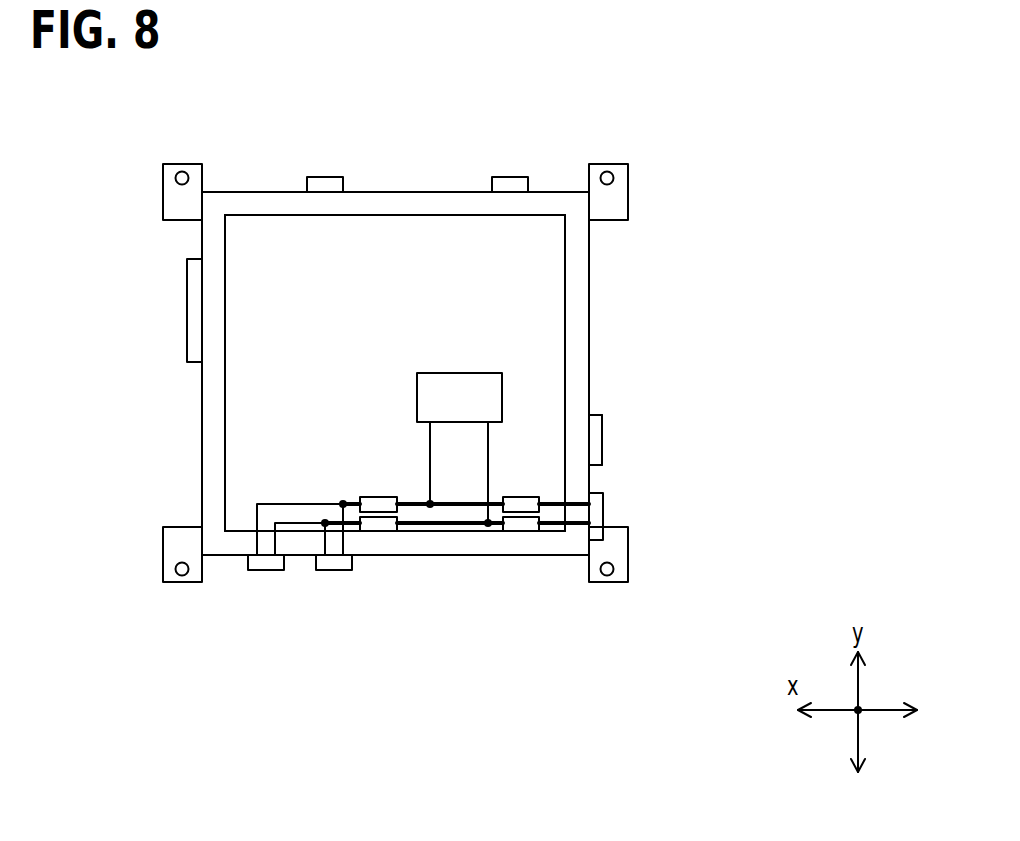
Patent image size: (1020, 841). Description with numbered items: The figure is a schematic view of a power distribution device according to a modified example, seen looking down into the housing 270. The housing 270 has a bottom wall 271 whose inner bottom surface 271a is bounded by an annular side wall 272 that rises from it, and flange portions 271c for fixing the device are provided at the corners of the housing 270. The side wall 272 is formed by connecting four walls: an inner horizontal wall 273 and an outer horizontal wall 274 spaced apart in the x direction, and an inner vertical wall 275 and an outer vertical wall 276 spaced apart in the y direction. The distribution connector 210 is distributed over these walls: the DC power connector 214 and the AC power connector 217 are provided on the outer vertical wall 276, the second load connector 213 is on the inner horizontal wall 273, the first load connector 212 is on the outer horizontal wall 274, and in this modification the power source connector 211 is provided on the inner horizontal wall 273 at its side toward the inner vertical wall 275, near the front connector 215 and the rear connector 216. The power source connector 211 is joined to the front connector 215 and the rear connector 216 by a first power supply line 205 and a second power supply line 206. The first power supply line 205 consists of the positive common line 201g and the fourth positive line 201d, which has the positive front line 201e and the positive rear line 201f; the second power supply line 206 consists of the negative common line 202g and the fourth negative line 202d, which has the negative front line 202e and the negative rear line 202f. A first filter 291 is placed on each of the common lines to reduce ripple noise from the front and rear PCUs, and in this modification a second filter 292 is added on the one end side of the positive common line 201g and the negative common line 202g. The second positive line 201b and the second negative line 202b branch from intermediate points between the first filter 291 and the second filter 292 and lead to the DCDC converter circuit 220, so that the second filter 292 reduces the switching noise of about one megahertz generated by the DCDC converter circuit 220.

The housing 270 is at (648, 102).
The bottom wall 271 is at (537, 227).
The inner bottom surface 271a is at (539, 274).
The flange portion 271c is at (163, 200).
The side wall 272 is at (575, 193).
The inner horizontal wall 273 is at (590, 330).
The outer horizontal wall 274 is at (202, 458).
The inner vertical wall 275 is at (477, 556).
The outer vertical wall 276 is at (430, 192).
The distribution connector 210 is at (600, 407).
The power source connector 211 is at (603, 498).
The first load connector 212 is at (187, 284).
The second load connector 213 is at (602, 440).
The DC power connector 214 is at (507, 177).
The front connector 215 is at (337, 572).
The rear connector 216 is at (257, 572).
The AC power connector 217 is at (322, 177).
The DCDC converter circuit 220 is at (459, 373).
The first power supply line 205 is at (408, 373).
The fourth positive line 201d is at (355, 420).
The positive rear line 201f is at (285, 503).
The positive front line 201e is at (340, 507).
The positive common line 201g is at (422, 504).
The second positive line 201b is at (458, 455).
The second power supply line 206 is at (443, 750).
The fourth negative line 202d is at (357, 693).
The negative rear line 202f is at (275, 540).
The negative front line 202e is at (325, 540).
The negative common line 202g is at (450, 525).
The second negative line 202b is at (490, 470).
The first filter 291 is at (379, 497).
The second filter 292 is at (523, 497).